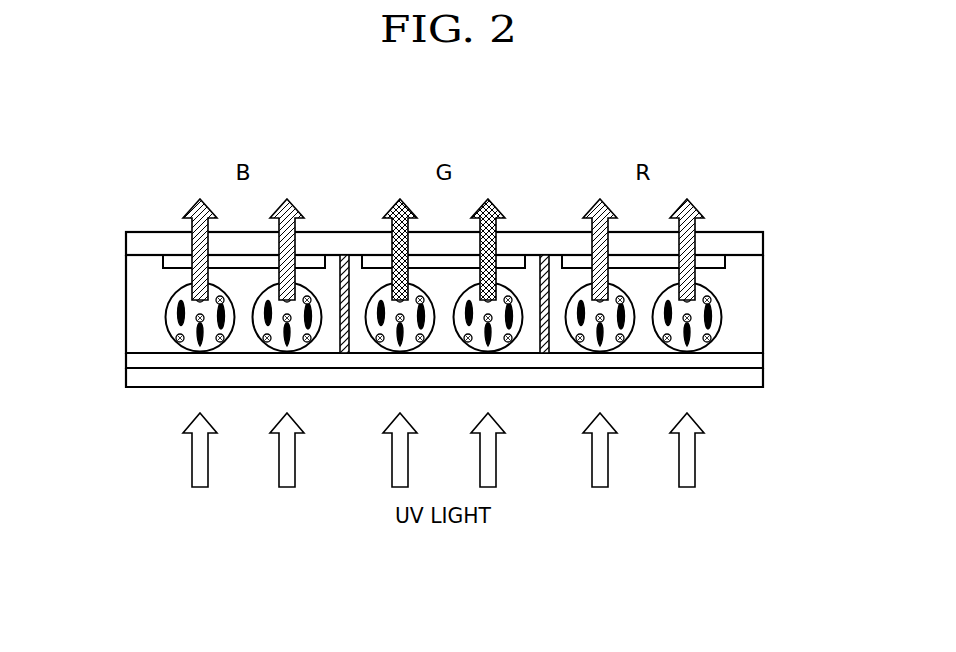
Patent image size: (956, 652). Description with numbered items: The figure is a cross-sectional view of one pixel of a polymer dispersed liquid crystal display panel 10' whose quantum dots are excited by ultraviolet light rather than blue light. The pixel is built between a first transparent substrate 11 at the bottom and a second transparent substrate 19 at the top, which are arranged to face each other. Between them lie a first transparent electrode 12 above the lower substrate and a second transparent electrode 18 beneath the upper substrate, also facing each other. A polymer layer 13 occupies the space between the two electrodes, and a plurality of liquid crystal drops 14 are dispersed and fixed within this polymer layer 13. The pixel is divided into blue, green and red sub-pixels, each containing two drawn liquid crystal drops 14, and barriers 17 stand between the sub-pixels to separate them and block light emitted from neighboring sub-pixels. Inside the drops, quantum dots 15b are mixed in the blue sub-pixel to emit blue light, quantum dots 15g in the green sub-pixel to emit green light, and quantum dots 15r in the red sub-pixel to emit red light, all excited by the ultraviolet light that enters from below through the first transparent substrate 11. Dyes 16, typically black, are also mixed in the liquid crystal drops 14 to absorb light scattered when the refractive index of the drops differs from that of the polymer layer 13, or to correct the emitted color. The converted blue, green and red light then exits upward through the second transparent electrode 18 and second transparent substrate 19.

The polymer dispersed liquid crystal display panel 10' is at (94, 178).
The first transparent substrate 11 is at (763, 383).
The first transparent electrode 12 is at (763, 362).
The polymer layer 13 is at (763, 338).
The liquid crystal drops 14 is at (717, 328).
The quantum dots 15b is at (219, 340).
The quantum dots 15g is at (419, 340).
The quantum dots 15r is at (691, 357).
The dyes 16 is at (708, 310).
The barriers 17 is at (345, 354).
The second transparent electrode 18 is at (727, 260).
The second transparent substrate 19 is at (763, 240).